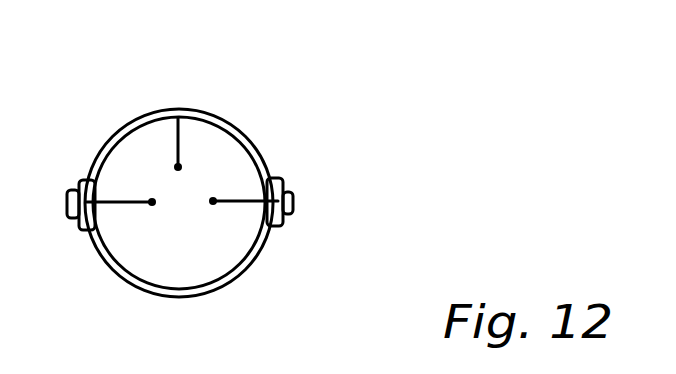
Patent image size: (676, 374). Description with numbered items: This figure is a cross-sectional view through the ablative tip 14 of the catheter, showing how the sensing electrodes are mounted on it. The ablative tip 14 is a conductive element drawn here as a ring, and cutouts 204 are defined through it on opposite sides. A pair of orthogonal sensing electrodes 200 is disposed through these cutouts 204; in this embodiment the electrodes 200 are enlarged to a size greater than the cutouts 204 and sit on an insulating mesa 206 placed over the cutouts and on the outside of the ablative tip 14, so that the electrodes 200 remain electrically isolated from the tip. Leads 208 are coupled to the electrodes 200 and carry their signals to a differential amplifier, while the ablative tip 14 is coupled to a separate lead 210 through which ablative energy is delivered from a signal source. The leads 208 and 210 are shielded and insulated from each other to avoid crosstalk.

The ablative tip 14 is at (265, 163).
The orthogonal sensing electrodes 200 is at (291, 211).
The cutouts 204 is at (92, 220).
The insulating mesa 206 is at (283, 177).
The leads 208 is at (127, 203).
The lead 210 is at (181, 144).